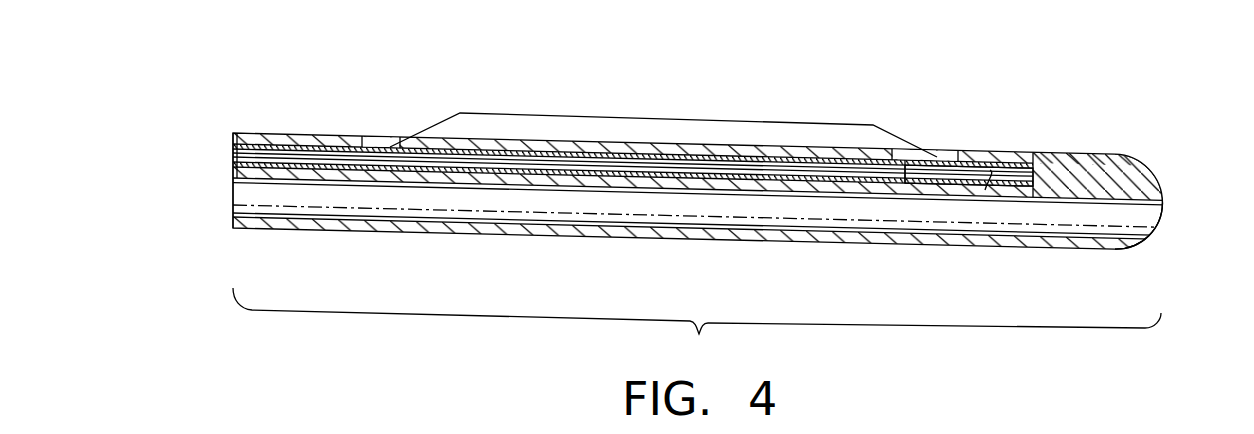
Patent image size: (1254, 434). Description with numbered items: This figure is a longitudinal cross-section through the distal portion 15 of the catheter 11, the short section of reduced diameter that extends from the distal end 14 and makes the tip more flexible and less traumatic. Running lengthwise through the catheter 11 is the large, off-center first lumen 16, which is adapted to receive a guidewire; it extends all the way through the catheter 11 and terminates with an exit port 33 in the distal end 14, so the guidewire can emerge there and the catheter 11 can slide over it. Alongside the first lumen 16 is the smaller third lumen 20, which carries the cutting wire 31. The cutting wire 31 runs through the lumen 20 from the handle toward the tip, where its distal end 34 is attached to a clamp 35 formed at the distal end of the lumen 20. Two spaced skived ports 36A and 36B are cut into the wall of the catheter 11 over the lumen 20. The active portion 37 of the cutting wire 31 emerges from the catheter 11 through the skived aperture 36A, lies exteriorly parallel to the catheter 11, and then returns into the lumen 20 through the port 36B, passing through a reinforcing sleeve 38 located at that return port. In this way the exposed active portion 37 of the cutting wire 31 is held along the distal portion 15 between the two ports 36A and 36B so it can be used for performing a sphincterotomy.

The catheter 11 is at (323, 134).
The distal end 14 is at (1113, 163).
The distal portion 15 is at (697, 325).
The first lumen 16 is at (283, 203).
The third lumen 20 is at (528, 158).
The cutting wire 31 is at (902, 139).
The exit port 33 is at (1152, 223).
The distal end of the cutting wire 34 is at (985, 190).
The clamp 35 is at (1010, 162).
The skived port 36A is at (947, 155).
The skived port 36B is at (383, 147).
The active portion of the cutting wire 37 is at (612, 118).
The reinforcing sleeve 38 is at (238, 132).